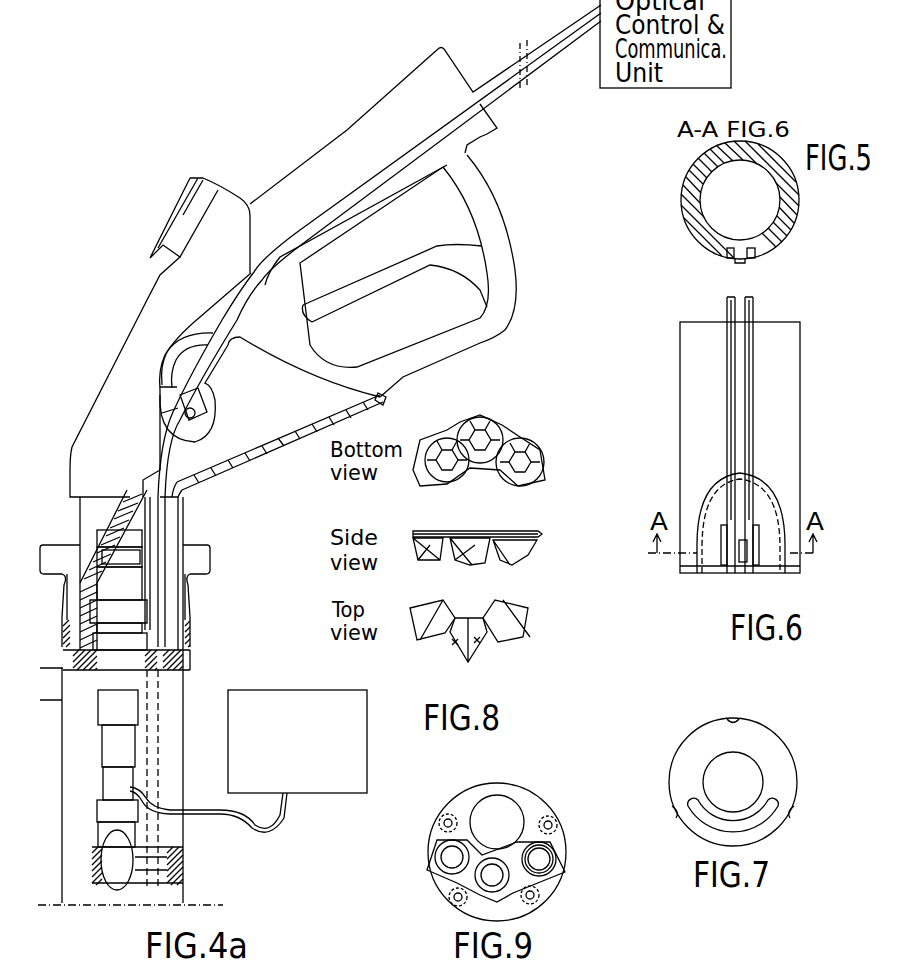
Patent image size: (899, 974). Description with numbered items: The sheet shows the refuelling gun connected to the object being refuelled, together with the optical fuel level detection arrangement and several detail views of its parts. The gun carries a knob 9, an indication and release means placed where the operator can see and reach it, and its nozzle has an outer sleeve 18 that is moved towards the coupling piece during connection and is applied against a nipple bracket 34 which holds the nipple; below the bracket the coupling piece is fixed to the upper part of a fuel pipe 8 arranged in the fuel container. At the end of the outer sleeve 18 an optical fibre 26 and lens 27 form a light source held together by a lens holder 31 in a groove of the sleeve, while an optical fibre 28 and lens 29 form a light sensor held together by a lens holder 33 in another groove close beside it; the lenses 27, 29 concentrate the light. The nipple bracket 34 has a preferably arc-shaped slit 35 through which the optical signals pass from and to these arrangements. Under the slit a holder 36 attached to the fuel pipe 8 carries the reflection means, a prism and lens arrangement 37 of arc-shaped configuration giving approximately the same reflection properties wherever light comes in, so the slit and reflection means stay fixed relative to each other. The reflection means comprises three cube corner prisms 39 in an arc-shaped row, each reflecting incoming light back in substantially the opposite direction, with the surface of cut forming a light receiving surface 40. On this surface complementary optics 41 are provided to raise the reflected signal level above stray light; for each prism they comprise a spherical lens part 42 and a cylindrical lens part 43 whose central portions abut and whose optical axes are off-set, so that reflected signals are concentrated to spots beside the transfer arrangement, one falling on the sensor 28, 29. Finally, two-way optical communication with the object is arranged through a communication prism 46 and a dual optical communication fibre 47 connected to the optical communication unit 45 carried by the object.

In FIG. 4A, the fuel pipe 8 is at (102, 758).
In FIG. 4A, the knob 9 is at (167, 215).
In FIG. 4A, the outer sleeve 18 is at (84, 516).
In FIG. 5, the outer sleeve 18 is at (690, 203).
In FIG. 6, the outer sleeve 18 is at (690, 352).
In FIG. 4A, the optical fibre 26 is at (167, 533).
In FIG. 5, the optical fibre 26 is at (727, 258).
In FIG. 6, the optical fibre 26 is at (722, 545).
In FIG. 4A, the lens 27 is at (383, 334).
In FIG. 6, the lens 27 is at (725, 575).
In FIG. 5, the optical fibre 28 is at (752, 260).
In FIG. 6, the optical fibre 28 is at (750, 498).
In FIG. 4A, the lens 29 is at (157, 870).
In FIG. 6, the lens 29 is at (752, 573).
In FIG. 8, the lens 29 is at (509, 420).
In FIG. 9, the lens 29 is at (545, 855).
In FIG. 6, the lens holder 31 is at (697, 565).
In FIG. 6, the lens holder 33 is at (748, 557).
In FIG. 4A, the nipple bracket 34 is at (183, 657).
In FIG. 7, the nipple bracket 34 is at (775, 748).
In FIG. 4A, the slit 35 is at (157, 667).
In FIG. 7, the slit 35 is at (762, 820).
In FIG. 4A, the holder 36 is at (92, 868).
In FIG. 9, the holder 36 is at (525, 803).
In FIG. 4A, the prism and lens arrangement 37 is at (97, 866).
In FIG. 8, the prism and lens arrangement 37 is at (515, 552).
In FIG. 9, the prism and lens arrangement 37 is at (539, 859).
In FIG. 8, the cube corner prism 39 is at (435, 466).
In FIG. 8, the light receiving surface 40 is at (432, 560).
In FIG. 8, the complementary optics 41 is at (525, 530).
In FIG. 8, the spherical lens part 42 is at (455, 530).
In FIG. 8, the cylindrical lens part 43 is at (520, 613).
In FIG. 4A, the optical communication unit 45 is at (283, 690).
In FIG. 4A, the communication prism 46 is at (117, 794).
In FIG. 4A, the dual optical communication fibre 47 is at (220, 809).